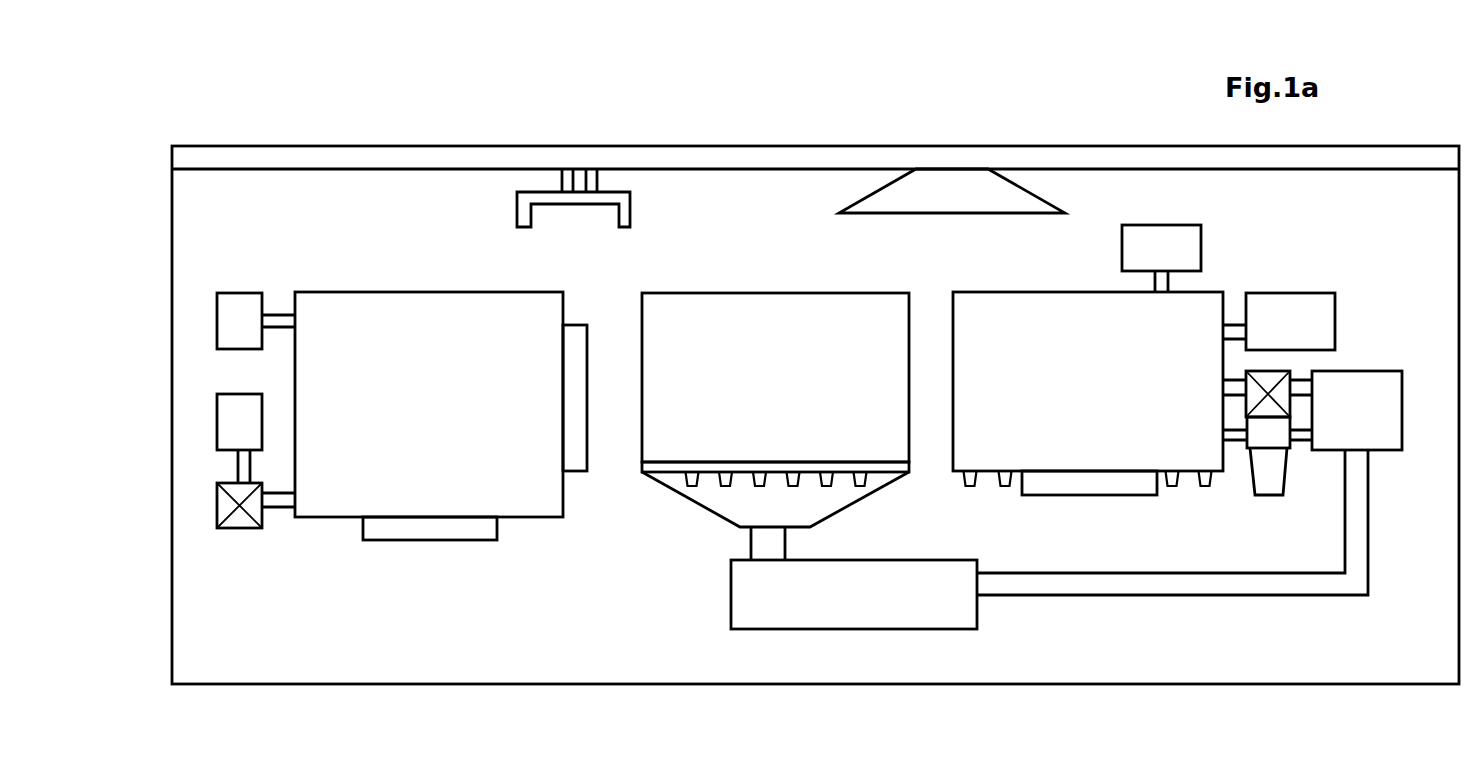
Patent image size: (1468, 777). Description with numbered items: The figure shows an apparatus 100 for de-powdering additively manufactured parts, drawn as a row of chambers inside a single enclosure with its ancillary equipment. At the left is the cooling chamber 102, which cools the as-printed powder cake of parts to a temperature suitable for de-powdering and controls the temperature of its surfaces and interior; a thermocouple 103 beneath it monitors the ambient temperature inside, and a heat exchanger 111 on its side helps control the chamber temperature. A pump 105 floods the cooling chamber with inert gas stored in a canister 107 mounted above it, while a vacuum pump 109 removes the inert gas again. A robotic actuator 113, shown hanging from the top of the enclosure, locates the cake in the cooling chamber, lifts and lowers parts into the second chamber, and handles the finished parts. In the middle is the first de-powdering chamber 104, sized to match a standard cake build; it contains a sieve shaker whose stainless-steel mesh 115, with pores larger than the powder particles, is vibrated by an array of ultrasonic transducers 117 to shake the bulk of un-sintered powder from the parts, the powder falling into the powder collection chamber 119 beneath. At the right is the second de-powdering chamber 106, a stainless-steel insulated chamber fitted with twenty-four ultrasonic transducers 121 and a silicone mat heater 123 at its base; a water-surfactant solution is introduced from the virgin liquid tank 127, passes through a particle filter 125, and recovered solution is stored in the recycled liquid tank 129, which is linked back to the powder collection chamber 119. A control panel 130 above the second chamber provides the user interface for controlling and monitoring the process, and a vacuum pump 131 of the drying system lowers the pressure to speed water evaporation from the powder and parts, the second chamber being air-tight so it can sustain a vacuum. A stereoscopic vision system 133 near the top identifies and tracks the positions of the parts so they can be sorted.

The apparatus 100 is at (212, 130).
The cooling chamber 102 is at (429, 404).
The thermocouple 103 is at (442, 528).
The first de-powdering chamber 104 is at (775, 426).
The pump 105 is at (245, 520).
The second de-powdering chamber 106 is at (1088, 381).
The canister 107 is at (243, 423).
The vacuum pump 109 is at (228, 313).
The heat exchanger 111 is at (572, 455).
The robotic actuator 113 is at (598, 191).
The stainless-steel mesh 115 is at (708, 467).
The ultrasonic transducers 117 is at (727, 482).
The powder collection chamber 119 is at (1049, 539).
The ultrasonic transducers 121 is at (975, 485).
The silicone mat heater 123 is at (1102, 478).
The particle filter 125 is at (1268, 478).
The virgin liquid tank 127 is at (1310, 302).
The recycled liquid tank 129 is at (1360, 390).
The control panel 130 is at (1172, 252).
The vacuum pump 131 is at (1257, 397).
The stereoscopic vision system 133 is at (952, 191).